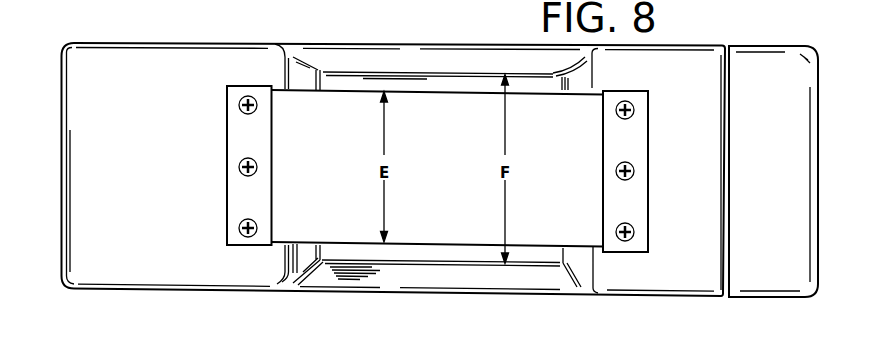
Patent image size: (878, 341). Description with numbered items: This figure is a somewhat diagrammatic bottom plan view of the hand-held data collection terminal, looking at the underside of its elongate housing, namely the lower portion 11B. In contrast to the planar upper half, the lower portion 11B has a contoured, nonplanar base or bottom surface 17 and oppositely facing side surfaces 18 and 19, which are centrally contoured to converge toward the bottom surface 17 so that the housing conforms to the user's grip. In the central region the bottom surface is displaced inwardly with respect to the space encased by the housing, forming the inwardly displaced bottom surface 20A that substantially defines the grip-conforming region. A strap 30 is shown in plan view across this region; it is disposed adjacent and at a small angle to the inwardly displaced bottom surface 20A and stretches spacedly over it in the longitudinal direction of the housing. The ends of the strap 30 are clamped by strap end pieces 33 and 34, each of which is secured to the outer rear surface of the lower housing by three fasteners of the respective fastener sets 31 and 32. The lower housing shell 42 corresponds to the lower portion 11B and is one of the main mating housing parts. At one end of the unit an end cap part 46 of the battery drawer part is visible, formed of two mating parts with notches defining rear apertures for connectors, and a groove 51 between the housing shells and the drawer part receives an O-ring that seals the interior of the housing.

The lower portion 11B is at (372, 57).
The bottom surface 17 is at (105, 225).
The side surface 18 is at (147, 40).
The side surface 19 is at (150, 289).
The inwardly displaced bottom surface 20A is at (363, 252).
The strap 30 is at (438, 96).
The set of fasteners 31 is at (247, 103).
The set of fasteners 32 is at (625, 241).
The strap end piece 33 is at (227, 226).
The strap end piece 34 is at (648, 218).
The lower housing shell 42 is at (64, 49).
The end cap part 46 is at (783, 46).
The groove 51 is at (437, 272).